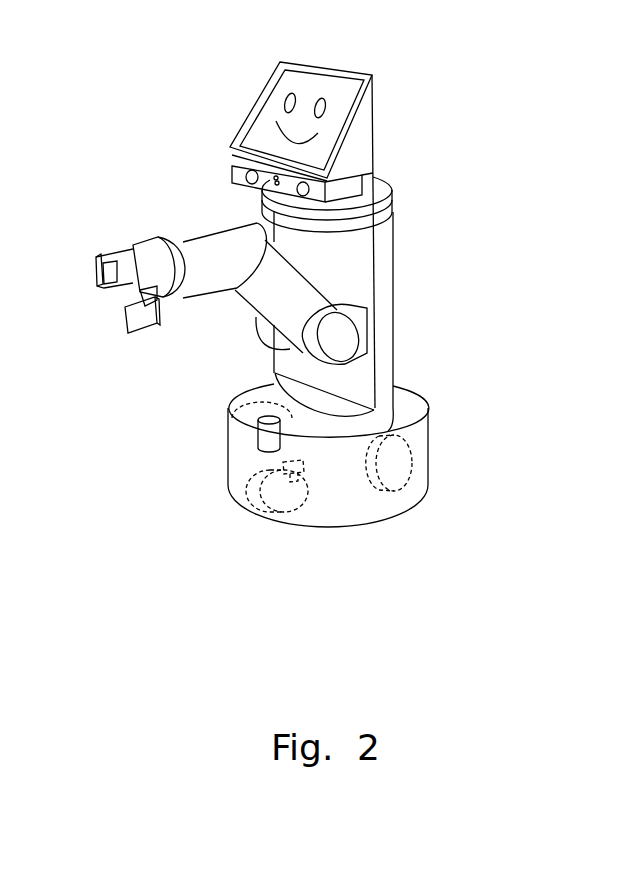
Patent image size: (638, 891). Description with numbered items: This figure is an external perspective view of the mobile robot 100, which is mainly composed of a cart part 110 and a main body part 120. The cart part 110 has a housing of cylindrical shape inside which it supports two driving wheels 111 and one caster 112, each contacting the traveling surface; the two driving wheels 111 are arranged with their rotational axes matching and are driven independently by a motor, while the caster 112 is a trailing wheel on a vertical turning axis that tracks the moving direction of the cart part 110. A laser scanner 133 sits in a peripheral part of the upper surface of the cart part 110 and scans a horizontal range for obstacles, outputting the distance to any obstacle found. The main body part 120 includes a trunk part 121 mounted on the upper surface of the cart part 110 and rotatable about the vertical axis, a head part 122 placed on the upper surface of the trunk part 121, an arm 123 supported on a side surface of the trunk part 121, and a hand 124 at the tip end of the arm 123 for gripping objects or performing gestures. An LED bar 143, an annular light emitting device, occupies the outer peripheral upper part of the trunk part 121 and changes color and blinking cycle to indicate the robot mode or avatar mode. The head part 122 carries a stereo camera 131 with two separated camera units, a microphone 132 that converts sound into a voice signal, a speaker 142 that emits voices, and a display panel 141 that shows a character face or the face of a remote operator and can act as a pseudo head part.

The mobile robot 100 is at (80, 25).
The cart part 110 is at (493, 385).
The driving wheel 111 is at (258, 410).
The caster 112 is at (292, 508).
The main body part 120 is at (493, 58).
The trunk part 121 is at (392, 323).
The head part 122 is at (363, 148).
The arm 123 is at (276, 298).
The hand 124 is at (143, 328).
The stereo camera 131 is at (255, 186).
The microphone 132 is at (277, 181).
The laser scanner 133 is at (267, 435).
The display panel 141 is at (277, 82).
The speaker 142 is at (265, 195).
The LED bar 143 is at (385, 222).